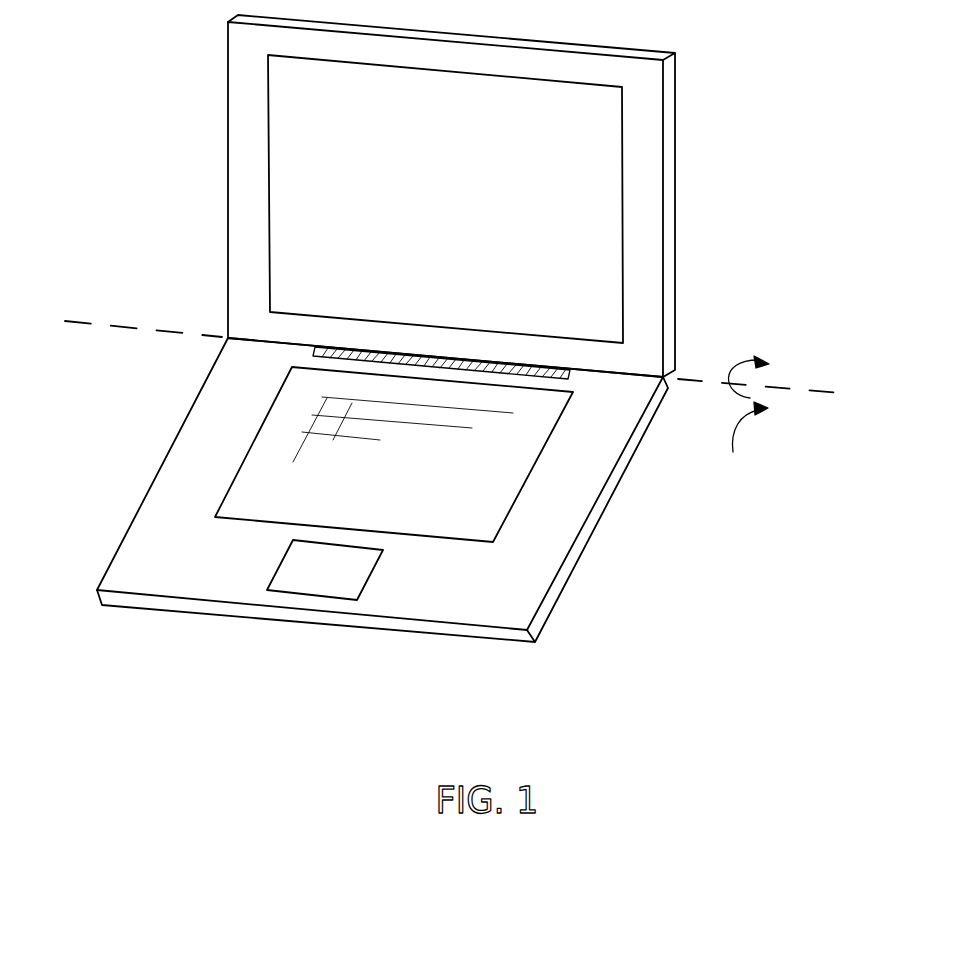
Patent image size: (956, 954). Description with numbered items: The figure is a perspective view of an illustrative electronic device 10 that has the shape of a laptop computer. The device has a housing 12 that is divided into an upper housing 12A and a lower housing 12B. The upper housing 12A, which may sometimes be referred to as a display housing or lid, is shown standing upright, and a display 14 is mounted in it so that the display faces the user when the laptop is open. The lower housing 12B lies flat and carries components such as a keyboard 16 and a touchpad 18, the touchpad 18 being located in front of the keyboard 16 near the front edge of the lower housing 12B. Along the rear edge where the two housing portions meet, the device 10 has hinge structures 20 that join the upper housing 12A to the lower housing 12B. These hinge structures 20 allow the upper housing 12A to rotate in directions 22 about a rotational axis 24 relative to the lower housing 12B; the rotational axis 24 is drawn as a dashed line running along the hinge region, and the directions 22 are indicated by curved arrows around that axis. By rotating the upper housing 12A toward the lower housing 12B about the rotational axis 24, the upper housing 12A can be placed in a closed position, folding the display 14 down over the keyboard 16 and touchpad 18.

The electronic device 10 is at (751, 49).
The housing 12 is at (676, 312).
The upper housing 12A is at (213, 23).
The lower housing 12B is at (207, 342).
The display 14 is at (587, 187).
The keyboard 16 is at (530, 472).
The touchpad 18 is at (370, 580).
The hinge structures 20 is at (547, 363).
The directions 22 is at (743, 417).
The rotational axis 24 is at (108, 326).